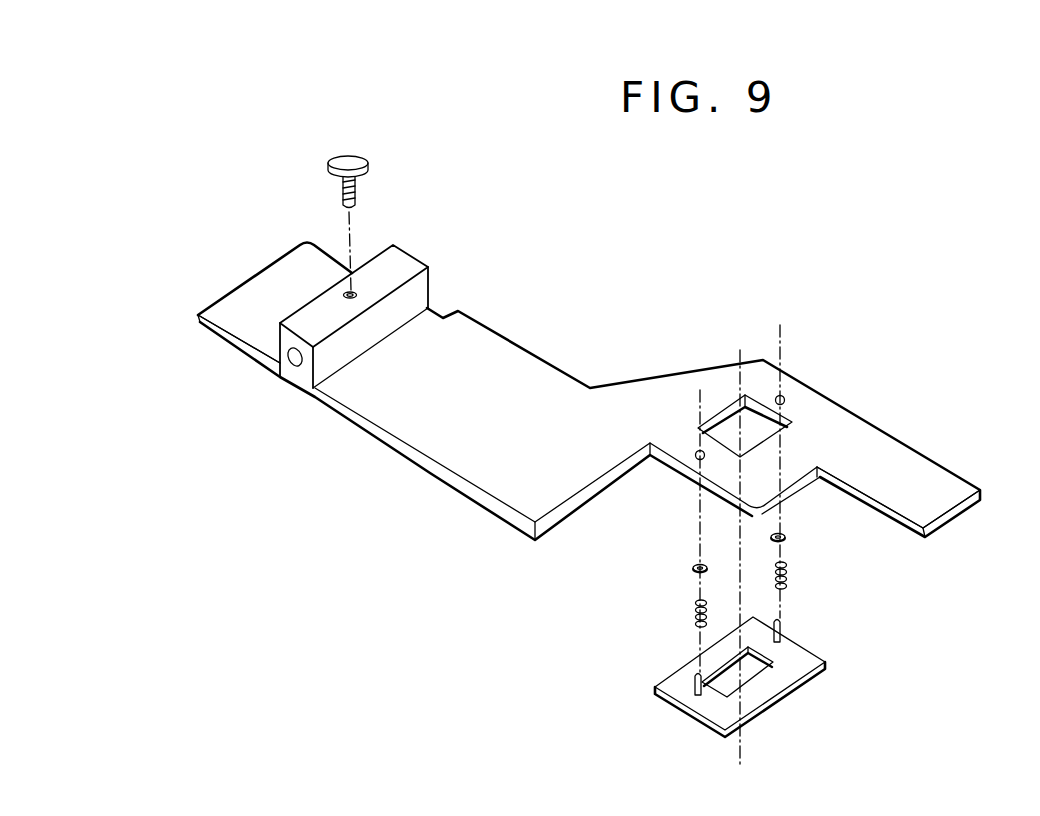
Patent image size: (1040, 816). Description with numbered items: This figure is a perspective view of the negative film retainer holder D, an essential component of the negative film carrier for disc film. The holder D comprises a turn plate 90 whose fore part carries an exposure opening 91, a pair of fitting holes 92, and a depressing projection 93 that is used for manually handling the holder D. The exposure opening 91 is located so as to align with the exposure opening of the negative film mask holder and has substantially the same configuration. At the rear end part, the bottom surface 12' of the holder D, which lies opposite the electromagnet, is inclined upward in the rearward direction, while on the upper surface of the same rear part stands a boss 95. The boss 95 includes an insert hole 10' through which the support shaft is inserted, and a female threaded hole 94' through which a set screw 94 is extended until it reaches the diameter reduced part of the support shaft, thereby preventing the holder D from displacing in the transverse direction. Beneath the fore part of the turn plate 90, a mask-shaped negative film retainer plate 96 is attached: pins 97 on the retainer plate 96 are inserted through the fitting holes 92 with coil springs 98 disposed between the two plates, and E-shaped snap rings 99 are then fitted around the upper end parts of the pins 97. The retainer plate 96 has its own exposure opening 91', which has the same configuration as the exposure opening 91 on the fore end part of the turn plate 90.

The turn plate 90 is at (370, 415).
The bottom surface 12' is at (236, 356).
The boss 95 is at (407, 255).
The insert hole 10' is at (276, 392).
The female threaded hole 94' is at (319, 285).
The set screw 94 is at (369, 214).
The negative film retainer holder D is at (395, 462).
The exposure opening 91 is at (745, 542).
The fitting holes 92 is at (785, 397).
The depressing projection 93 is at (912, 460).
The E-shaped snap rings 99 is at (781, 534).
The coil springs 98 is at (694, 602).
The pins 97 is at (695, 685).
The negative film retainer plate 96 is at (807, 657).
The exposure opening 91' is at (758, 691).